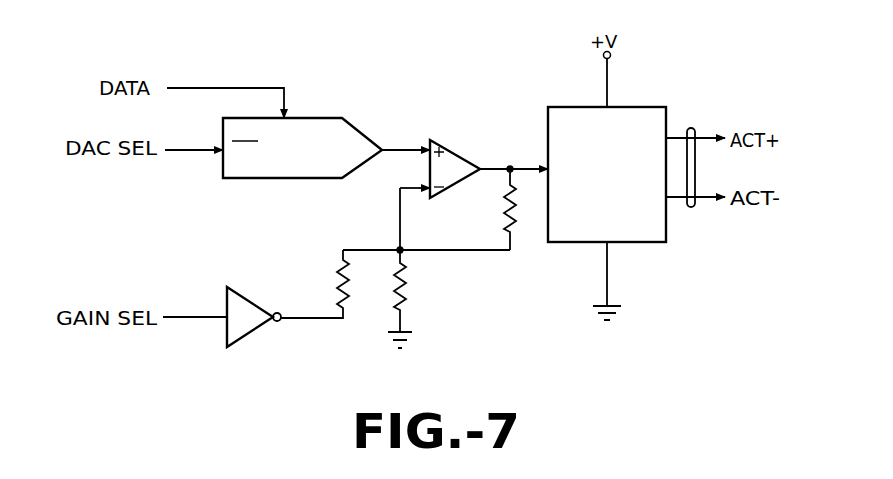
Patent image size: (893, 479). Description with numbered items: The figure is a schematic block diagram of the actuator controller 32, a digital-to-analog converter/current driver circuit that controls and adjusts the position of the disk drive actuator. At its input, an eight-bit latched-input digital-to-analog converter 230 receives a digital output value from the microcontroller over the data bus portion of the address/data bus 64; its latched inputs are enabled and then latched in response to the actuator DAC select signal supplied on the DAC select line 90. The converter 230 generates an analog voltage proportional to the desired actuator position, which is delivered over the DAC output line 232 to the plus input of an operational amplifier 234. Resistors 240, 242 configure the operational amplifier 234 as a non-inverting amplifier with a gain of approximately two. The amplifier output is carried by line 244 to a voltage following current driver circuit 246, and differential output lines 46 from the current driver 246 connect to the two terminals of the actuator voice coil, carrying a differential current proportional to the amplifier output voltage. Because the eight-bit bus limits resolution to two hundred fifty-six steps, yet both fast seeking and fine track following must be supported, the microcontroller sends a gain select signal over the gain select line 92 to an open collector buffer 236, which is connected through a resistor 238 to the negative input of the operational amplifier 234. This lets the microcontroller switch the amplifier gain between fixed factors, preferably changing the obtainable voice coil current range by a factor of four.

The actuator controller 32 is at (403, 80).
The differential output lines 46 is at (691, 207).
The address/data bus 64 is at (236, 88).
The DAC select line 90 is at (195, 150).
The gain select line 92 is at (200, 317).
The digital-to-analog converter 230 is at (286, 178).
The DAC output line 232 is at (401, 150).
The operational amplifier 234 is at (458, 152).
The open collector buffer 236 is at (250, 330).
The resistor 238 is at (343, 276).
The resistor 240 is at (404, 281).
The resistor 242 is at (507, 212).
The line 244 is at (510, 166).
The current driver circuit 246 is at (631, 107).